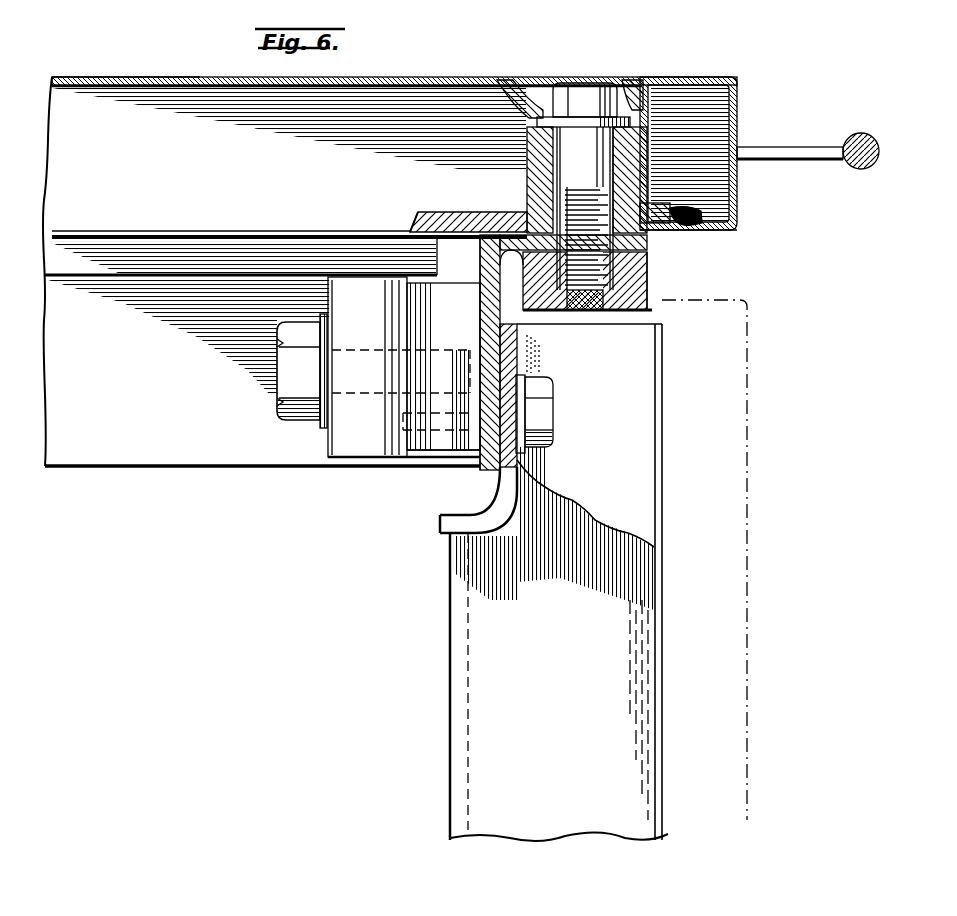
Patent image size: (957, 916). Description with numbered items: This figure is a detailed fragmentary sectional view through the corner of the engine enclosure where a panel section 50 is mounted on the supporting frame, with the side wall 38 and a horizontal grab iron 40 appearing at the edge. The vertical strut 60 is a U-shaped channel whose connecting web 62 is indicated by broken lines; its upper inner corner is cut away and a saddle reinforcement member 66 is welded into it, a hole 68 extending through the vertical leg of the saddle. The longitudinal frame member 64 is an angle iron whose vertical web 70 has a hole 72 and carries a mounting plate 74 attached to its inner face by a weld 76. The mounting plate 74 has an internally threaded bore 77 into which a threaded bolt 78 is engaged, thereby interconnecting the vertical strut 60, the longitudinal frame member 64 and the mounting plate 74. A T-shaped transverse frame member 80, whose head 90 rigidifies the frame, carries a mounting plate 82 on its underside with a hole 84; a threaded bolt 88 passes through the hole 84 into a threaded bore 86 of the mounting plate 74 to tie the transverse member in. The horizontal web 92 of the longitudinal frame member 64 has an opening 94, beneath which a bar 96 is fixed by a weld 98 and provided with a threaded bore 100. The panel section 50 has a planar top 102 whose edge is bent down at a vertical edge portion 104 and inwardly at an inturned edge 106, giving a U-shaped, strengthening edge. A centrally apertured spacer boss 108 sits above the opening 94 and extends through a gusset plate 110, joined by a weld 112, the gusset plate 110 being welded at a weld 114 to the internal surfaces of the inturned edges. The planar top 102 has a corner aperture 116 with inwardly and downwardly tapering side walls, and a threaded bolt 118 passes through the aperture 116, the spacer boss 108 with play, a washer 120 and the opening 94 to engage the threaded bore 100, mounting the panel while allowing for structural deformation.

The side wall 38 is at (747, 643).
The horizontal grab iron 40 is at (852, 133).
The panel section 50 is at (80, 77).
The vertical strut 60 is at (570, 684).
The connecting web 62 is at (460, 615).
The longitudinal frame member 64 is at (489, 323).
The saddle reinforcement member 66 is at (492, 518).
The hole 68 is at (527, 370).
The vertical web 70 is at (512, 466).
The hole 72 is at (463, 457).
The mounting plate 74 is at (417, 437).
The weld 76 is at (478, 285).
The internally threaded bore 77 is at (400, 413).
The threaded bolt 78 is at (542, 413).
The T-shaped transverse frame member 80 is at (176, 410).
The mounting plate 82 is at (333, 442).
The hole 84 is at (363, 360).
The threaded bore 86 is at (427, 350).
The threaded bolt 88 is at (305, 381).
The head of transverse frame member 90 is at (57, 253).
The horizontal web 92 is at (636, 242).
The opening 94 is at (640, 256).
The bar 96 is at (652, 303).
The weld 98 is at (523, 256).
The threaded bore 100 is at (583, 310).
The planar top 102 is at (211, 77).
The vertical edge portion 104 is at (740, 95).
The inturned edge 106 is at (248, 234).
The spacer boss 108 is at (527, 203).
The gusset plate 110 is at (410, 226).
The weld 112 is at (527, 207).
The weld 114 is at (686, 225).
The aperture 116 is at (546, 80).
The threaded bolt 118 is at (597, 143).
The washer 120 is at (520, 105).